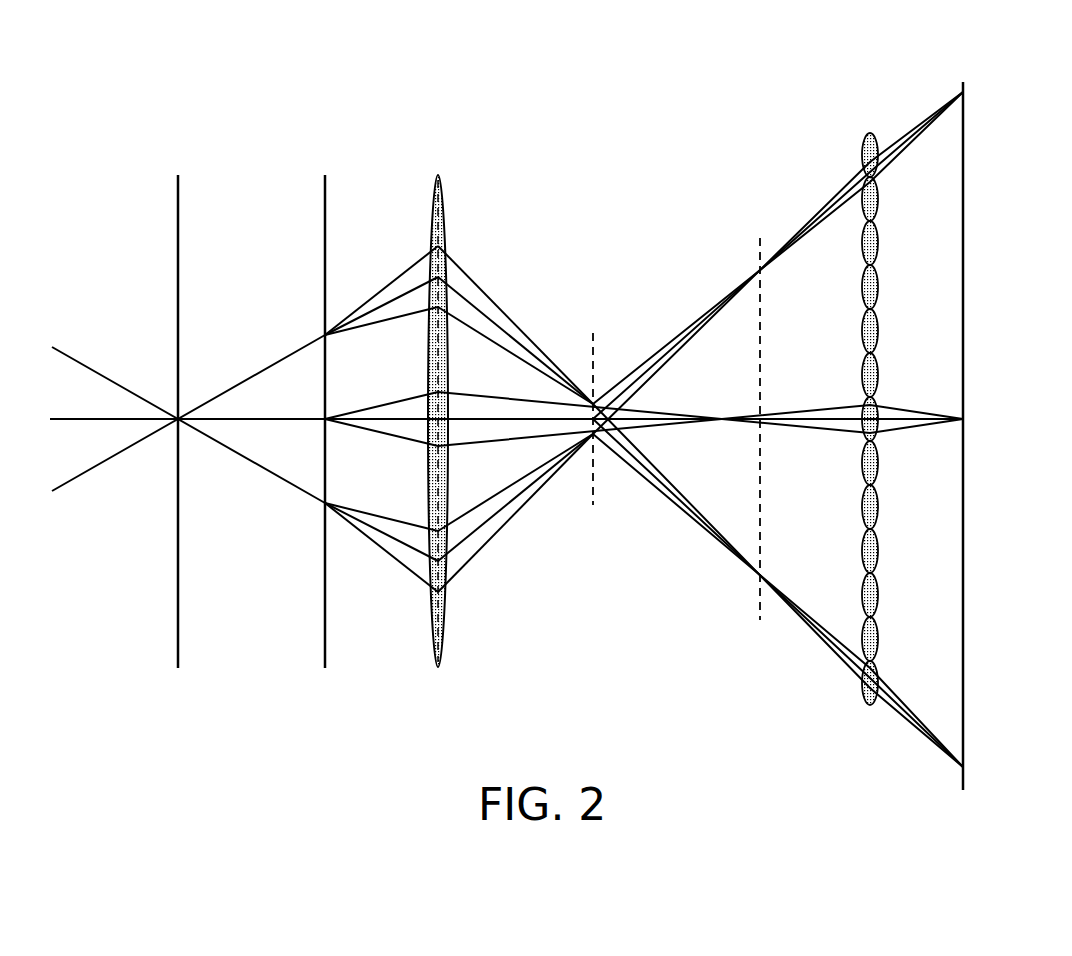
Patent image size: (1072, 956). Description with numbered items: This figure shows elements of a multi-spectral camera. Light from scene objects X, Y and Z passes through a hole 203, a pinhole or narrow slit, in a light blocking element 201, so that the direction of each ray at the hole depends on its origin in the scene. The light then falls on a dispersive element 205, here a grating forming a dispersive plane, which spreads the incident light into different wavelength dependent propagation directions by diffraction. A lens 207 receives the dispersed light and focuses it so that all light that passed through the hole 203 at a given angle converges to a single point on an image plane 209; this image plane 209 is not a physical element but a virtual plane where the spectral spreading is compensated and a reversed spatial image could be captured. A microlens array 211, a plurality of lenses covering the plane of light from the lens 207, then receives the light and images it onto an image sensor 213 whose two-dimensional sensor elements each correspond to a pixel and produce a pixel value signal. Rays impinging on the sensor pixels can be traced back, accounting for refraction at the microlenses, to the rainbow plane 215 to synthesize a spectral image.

The light blocking element 201 is at (178, 176).
The hole 203 is at (183, 408).
The dispersive element 205 is at (325, 176).
The lens 207 is at (438, 176).
The image plane 209 is at (760, 238).
The microlens array 211 is at (866, 134).
The image sensor 213 is at (966, 250).
The rainbow plane 215 is at (593, 333).